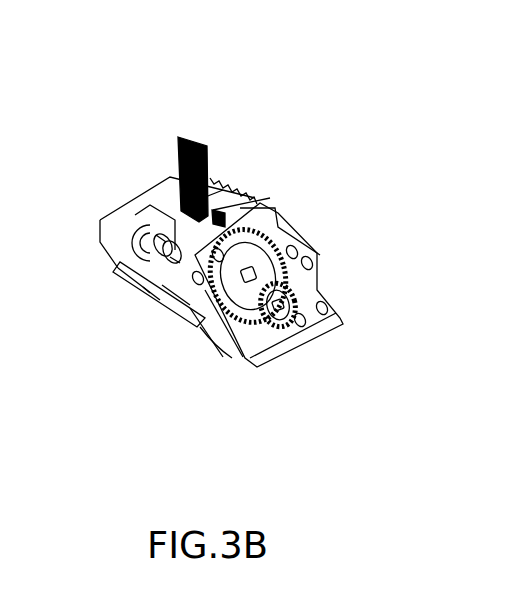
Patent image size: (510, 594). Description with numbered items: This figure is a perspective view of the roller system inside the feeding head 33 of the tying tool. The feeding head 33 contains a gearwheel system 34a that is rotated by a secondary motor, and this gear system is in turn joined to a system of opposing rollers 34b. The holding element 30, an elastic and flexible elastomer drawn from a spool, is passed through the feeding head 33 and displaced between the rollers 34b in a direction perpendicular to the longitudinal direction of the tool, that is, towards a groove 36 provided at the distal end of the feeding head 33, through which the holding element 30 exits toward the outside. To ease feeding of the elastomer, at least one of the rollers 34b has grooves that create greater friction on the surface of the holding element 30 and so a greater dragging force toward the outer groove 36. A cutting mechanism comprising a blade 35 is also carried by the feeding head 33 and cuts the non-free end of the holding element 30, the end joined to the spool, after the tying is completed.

The holding element 30 is at (175, 162).
The feeding head 33 is at (271, 129).
The gearwheel system 34a is at (267, 300).
The opposing rollers 34b is at (153, 290).
The blade 35 is at (228, 203).
The groove 36 is at (170, 207).